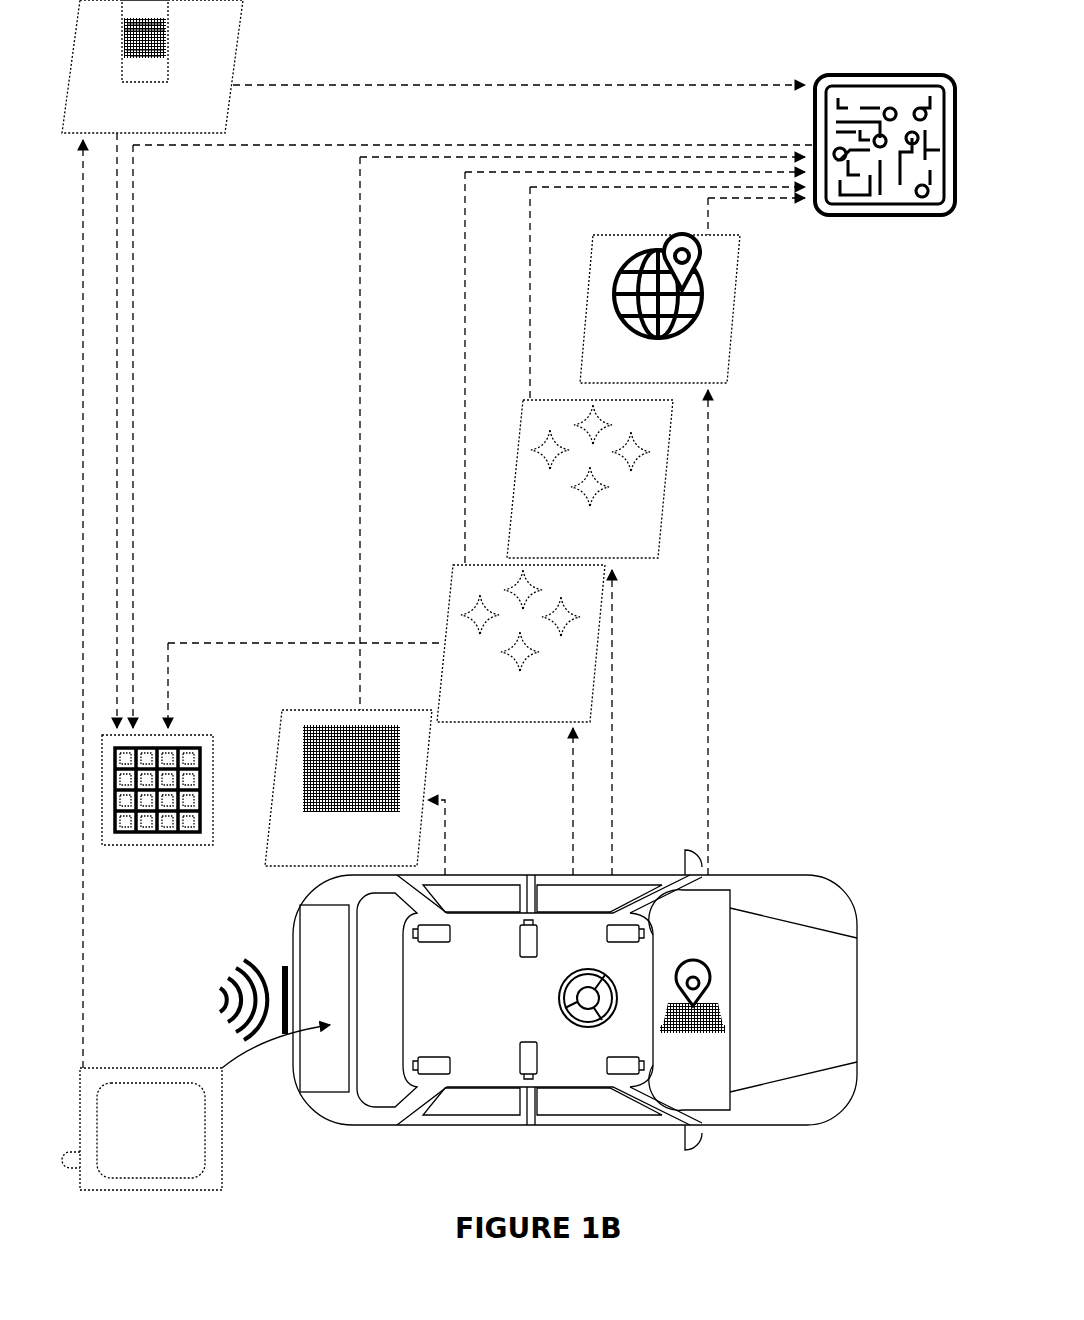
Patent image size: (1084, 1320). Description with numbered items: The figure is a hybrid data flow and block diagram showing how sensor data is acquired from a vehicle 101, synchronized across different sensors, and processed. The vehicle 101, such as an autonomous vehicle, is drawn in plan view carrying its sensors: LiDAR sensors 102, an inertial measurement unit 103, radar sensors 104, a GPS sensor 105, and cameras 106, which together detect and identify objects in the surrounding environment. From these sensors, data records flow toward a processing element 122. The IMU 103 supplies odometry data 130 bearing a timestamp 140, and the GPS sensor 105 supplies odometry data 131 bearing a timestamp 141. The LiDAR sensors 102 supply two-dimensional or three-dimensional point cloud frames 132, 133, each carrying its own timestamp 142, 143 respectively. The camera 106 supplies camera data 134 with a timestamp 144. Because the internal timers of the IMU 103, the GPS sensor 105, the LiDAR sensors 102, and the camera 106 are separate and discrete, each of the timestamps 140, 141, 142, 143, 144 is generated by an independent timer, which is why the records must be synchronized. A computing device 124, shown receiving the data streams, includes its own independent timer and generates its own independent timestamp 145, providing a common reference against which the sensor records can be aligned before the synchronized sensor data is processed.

The vehicle 101 is at (778, 952).
The LiDAR sensors 102 is at (588, 1027).
The inertial measurement unit 103 is at (196, 1107).
The radar sensors 104 is at (222, 1001).
The GPS sensor 105 is at (725, 1015).
The cameras 106 is at (413, 935).
The processor / controller chip 122 is at (885, 215).
The computing device 124 is at (108, 806).
The odometry data 130 is at (168, 35).
The odometry data 131 is at (702, 300).
The point cloud frame 132 is at (590, 456).
The point cloud frame 133 is at (520, 621).
The camera data 134 is at (303, 776).
The timestamp 140 is at (195, 118).
The timestamp 141 is at (595, 338).
The timestamp 142 is at (535, 520).
The timestamp 143 is at (455, 683).
The timestamp 144 is at (318, 842).
The timestamp 145 is at (170, 898).